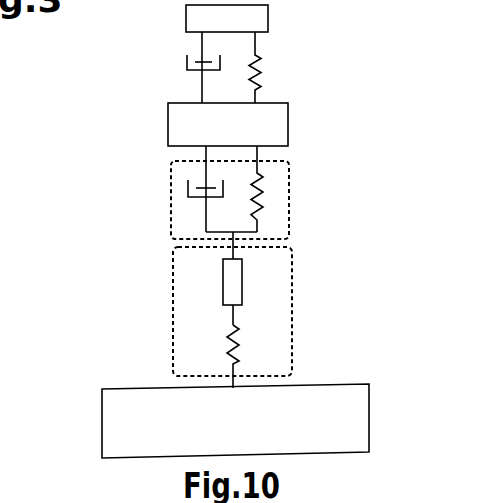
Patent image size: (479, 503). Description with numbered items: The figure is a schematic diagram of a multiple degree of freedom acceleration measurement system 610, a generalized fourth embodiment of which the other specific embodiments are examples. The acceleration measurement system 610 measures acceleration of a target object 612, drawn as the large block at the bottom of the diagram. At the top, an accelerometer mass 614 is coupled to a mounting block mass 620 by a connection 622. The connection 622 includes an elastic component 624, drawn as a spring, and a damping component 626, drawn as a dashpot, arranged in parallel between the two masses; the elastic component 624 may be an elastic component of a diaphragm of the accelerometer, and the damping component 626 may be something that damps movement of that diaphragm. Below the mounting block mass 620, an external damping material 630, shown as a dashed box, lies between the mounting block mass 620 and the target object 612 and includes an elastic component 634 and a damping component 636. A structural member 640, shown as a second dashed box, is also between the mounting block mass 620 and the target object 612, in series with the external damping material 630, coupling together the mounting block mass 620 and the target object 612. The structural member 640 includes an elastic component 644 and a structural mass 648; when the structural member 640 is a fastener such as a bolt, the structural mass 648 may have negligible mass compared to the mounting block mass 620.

The multiple degree of freedom acceleration measurement system 610 is at (88, 94).
The target object 612 is at (330, 385).
The accelerometer mass 614 is at (268, 15).
The mounting block mass 620 is at (289, 126).
The connection 622 is at (155, 57).
The elastic component 624 is at (260, 56).
The damping component 626 is at (185, 71).
The external damping material 630 is at (292, 170).
The elastic component 634 is at (262, 200).
The damping component 636 is at (188, 188).
The structural member 640 is at (295, 251).
The elastic component 644 is at (236, 337).
The structural mass 648 is at (242, 279).